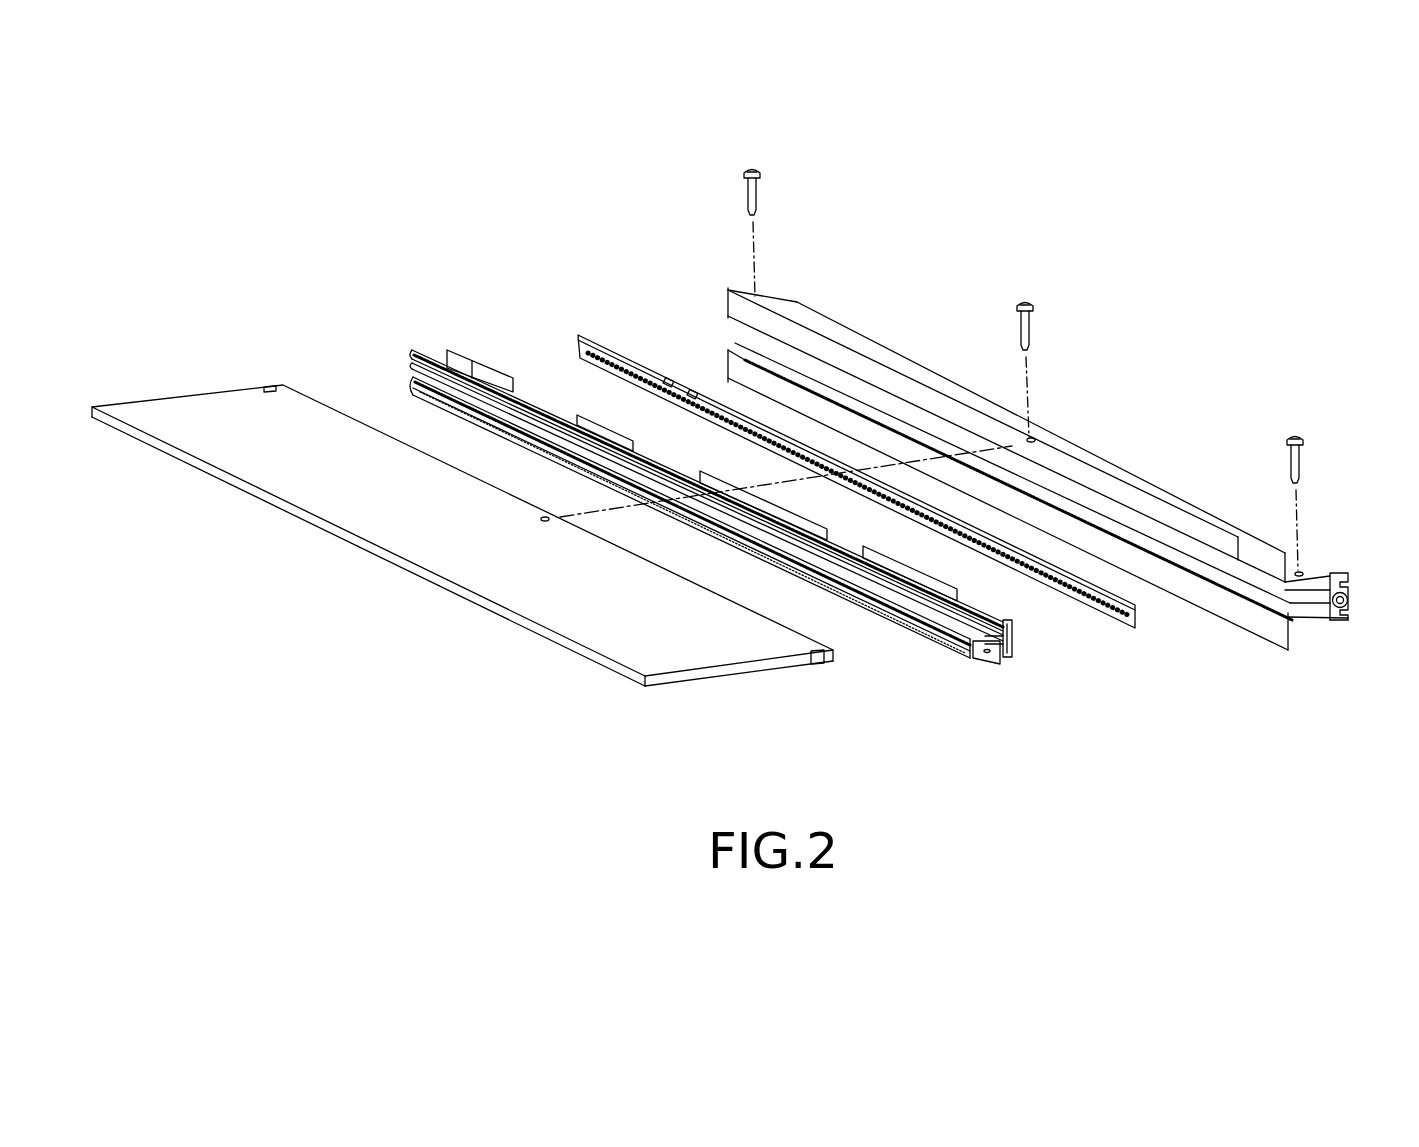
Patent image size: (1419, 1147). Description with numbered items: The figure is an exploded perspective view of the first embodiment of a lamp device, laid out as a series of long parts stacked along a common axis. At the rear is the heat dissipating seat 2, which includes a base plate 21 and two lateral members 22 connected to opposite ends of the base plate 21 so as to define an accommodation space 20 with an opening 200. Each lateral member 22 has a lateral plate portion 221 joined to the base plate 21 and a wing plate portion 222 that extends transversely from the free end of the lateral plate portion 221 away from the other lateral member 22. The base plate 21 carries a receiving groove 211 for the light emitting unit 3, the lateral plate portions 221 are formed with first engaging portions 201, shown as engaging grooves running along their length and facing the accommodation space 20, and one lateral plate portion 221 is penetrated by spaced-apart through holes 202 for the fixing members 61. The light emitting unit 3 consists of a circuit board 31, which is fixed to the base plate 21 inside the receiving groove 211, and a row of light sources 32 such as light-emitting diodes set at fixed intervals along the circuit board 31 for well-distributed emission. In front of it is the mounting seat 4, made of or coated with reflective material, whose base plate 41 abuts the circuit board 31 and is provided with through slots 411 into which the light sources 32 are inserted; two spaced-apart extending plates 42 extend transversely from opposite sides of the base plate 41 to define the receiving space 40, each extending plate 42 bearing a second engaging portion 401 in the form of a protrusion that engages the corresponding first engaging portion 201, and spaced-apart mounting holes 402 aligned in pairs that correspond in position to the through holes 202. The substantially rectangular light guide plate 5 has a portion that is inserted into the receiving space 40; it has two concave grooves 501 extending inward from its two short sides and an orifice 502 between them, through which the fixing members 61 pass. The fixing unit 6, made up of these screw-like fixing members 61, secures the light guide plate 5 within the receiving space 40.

The heat dissipating seat 2 is at (1036, 496).
The accommodation space 20 is at (1073, 545).
The opening 200 is at (1262, 610).
The first engaging portion 201 is at (1326, 590).
The through hole 202 is at (1036, 437).
The base plate 21 is at (1374, 597).
The receiving groove 211 is at (1347, 619).
The lateral member 22 is at (1032, 496).
The lateral plate portion 221 is at (1175, 487).
The wing plate portion 222 is at (743, 300).
The light emitting unit 3 is at (815, 423).
The circuit board 31 is at (608, 344).
The light source 32 is at (580, 362).
The mounting seat 4 is at (724, 485).
The receiving space 40 is at (692, 555).
The second engaging portion 401 is at (975, 654).
The mounting hole 402 is at (447, 355).
The base plate 41 is at (1040, 674).
The through slot 411 is at (1000, 656).
The extending plate 42 is at (988, 660).
The light guide plate 5 is at (165, 372).
The concave groove 501 is at (268, 387).
The orifice 502 is at (545, 517).
The fixing unit 6 is at (994, 362).
The fixing member 61 is at (770, 180).